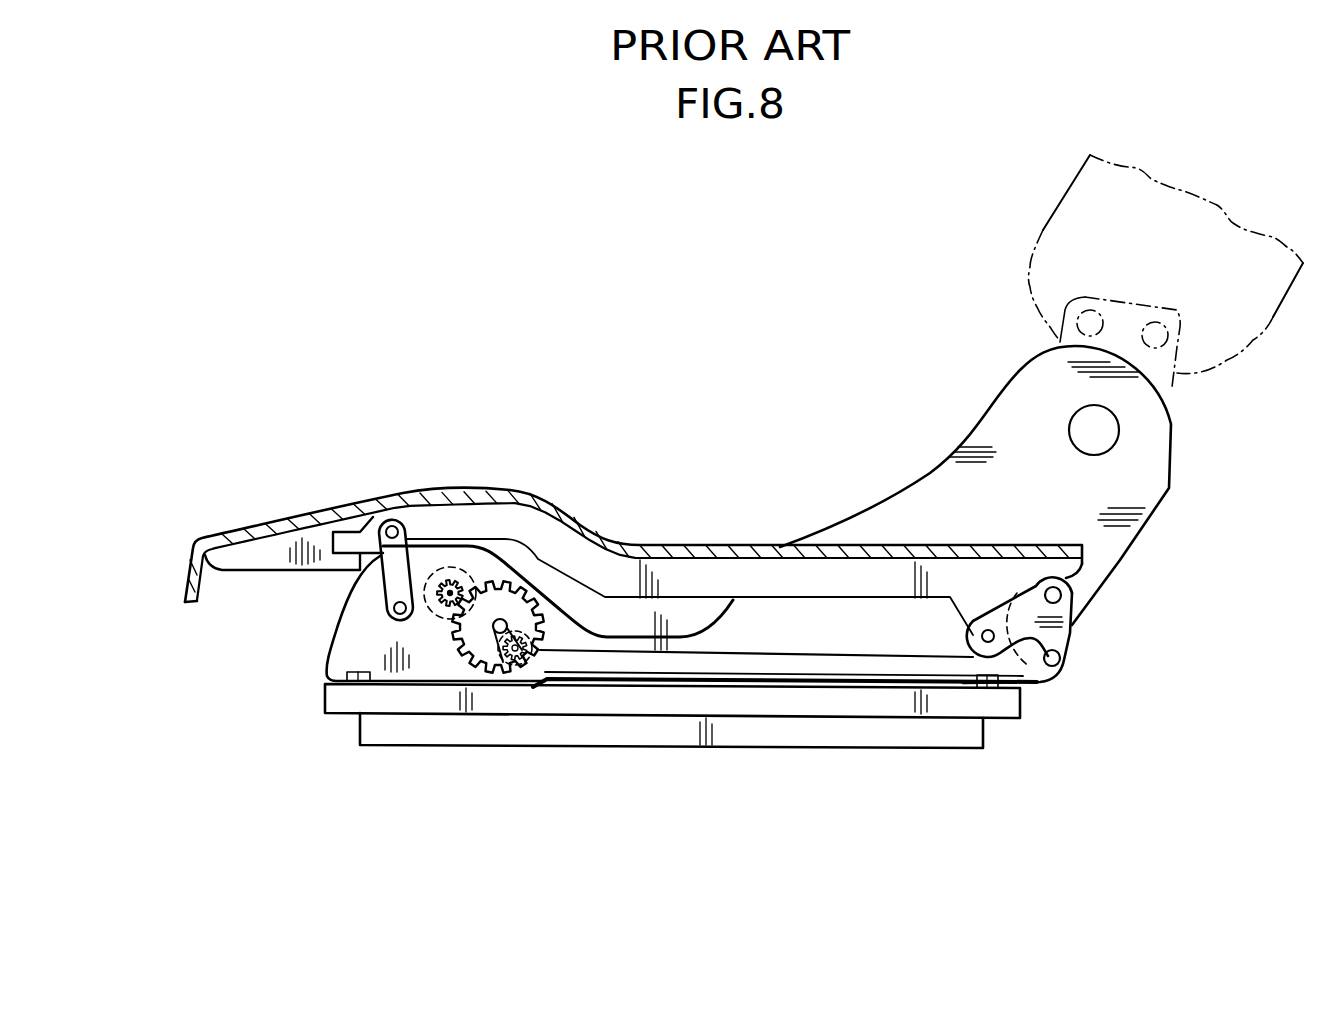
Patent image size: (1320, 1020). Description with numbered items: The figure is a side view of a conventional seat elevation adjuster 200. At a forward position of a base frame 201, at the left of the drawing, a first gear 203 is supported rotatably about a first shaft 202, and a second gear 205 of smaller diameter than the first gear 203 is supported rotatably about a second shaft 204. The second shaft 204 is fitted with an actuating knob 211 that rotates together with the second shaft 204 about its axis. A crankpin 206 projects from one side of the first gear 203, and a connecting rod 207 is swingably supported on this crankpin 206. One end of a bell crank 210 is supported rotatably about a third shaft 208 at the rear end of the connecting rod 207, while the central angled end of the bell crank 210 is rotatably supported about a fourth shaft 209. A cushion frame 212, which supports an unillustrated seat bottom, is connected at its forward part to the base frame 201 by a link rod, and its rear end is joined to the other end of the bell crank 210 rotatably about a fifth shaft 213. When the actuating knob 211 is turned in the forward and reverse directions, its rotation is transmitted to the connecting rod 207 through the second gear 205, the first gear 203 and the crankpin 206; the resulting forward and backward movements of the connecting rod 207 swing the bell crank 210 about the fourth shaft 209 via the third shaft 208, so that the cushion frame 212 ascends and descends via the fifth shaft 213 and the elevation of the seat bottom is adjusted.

The seat elevation adjuster 200 is at (733, 700).
The base frame 201 is at (425, 645).
The first shaft 202 is at (497, 680).
The first gear 203 is at (523, 597).
The second shaft 204 is at (403, 597).
The second gear 205 is at (452, 568).
The crankpin 206 is at (533, 685).
The connecting rod 207 is at (890, 673).
The third shaft 208 is at (1058, 668).
The fourth shaft 209 is at (1062, 594).
The bell crank 210 is at (1073, 637).
The actuating knob 211 is at (475, 580).
The cushion frame 212 is at (682, 550).
The fifth shaft 213 is at (980, 635).